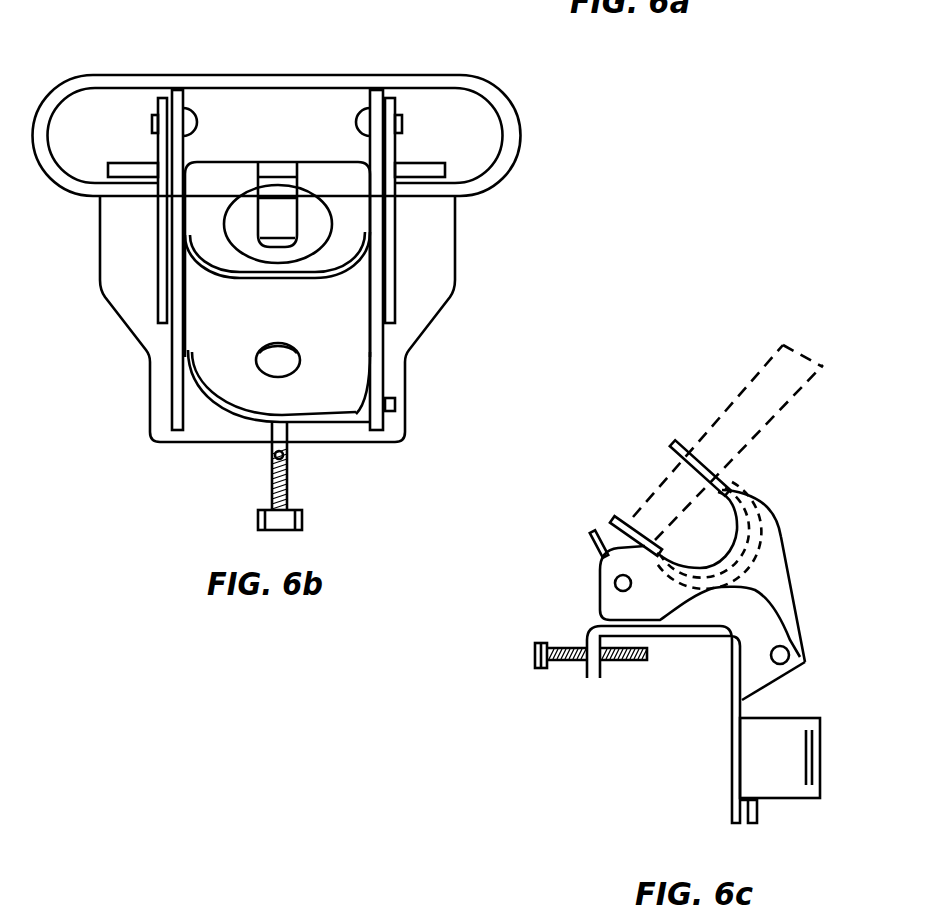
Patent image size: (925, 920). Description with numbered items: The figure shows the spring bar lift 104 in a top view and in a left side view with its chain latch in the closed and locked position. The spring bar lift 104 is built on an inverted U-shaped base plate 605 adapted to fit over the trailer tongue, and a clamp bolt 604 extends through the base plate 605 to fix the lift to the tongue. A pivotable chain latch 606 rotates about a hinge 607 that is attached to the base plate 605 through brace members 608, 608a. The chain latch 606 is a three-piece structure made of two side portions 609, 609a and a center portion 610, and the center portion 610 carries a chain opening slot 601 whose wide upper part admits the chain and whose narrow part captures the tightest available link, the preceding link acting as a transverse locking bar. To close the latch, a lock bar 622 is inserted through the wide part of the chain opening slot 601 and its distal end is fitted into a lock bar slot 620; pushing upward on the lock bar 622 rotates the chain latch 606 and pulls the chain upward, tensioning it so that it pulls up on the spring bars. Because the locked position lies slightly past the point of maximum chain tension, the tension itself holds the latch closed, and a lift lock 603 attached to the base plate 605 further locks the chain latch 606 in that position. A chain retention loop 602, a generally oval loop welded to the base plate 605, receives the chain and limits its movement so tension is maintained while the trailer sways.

In FIG. 6b, the spring bar lift 104 is at (555, 170).
In FIG. 6c, the spring bar lift 104 is at (550, 600).
In FIG. 6b, the chain opening slot 601 is at (315, 220).
In FIG. 6b, the chain retention loop 602 is at (445, 73).
In FIG. 6c, the chain retention loop 602 is at (800, 760).
In FIG. 6b, the lift lock 603 is at (351, 425).
In FIG. 6c, the lift lock 603 is at (700, 601).
In FIG. 6b, the clamp bolt 604 is at (273, 476).
In FIG. 6c, the clamp bolt 604 is at (622, 662).
In FIG. 6b, the base plate 605 is at (433, 322).
In FIG. 6c, the base plate 605 is at (732, 760).
In FIG. 6b, the chain latch 606 is at (200, 210).
In FIG. 6c, the chain latch 606 is at (717, 475).
In FIG. 6c, the hinge 607 is at (798, 657).
In FIG. 6b, the plate 608 is at (165, 308).
In FIG. 6c, the brace member 608a is at (765, 622).
In FIG. 6b, the plate 609 is at (380, 374).
In FIG. 6c, the side portion 609a is at (778, 540).
In FIG. 6b, the center portion 610 is at (330, 257).
In FIG. 6c, the center portion 610 is at (613, 517).
In FIG. 6b, the lock bar slot 620 is at (277, 358).
In FIG. 6c, the lock bar slot 620 is at (633, 539).
In FIG. 6c, the lock bar 622 is at (796, 387).